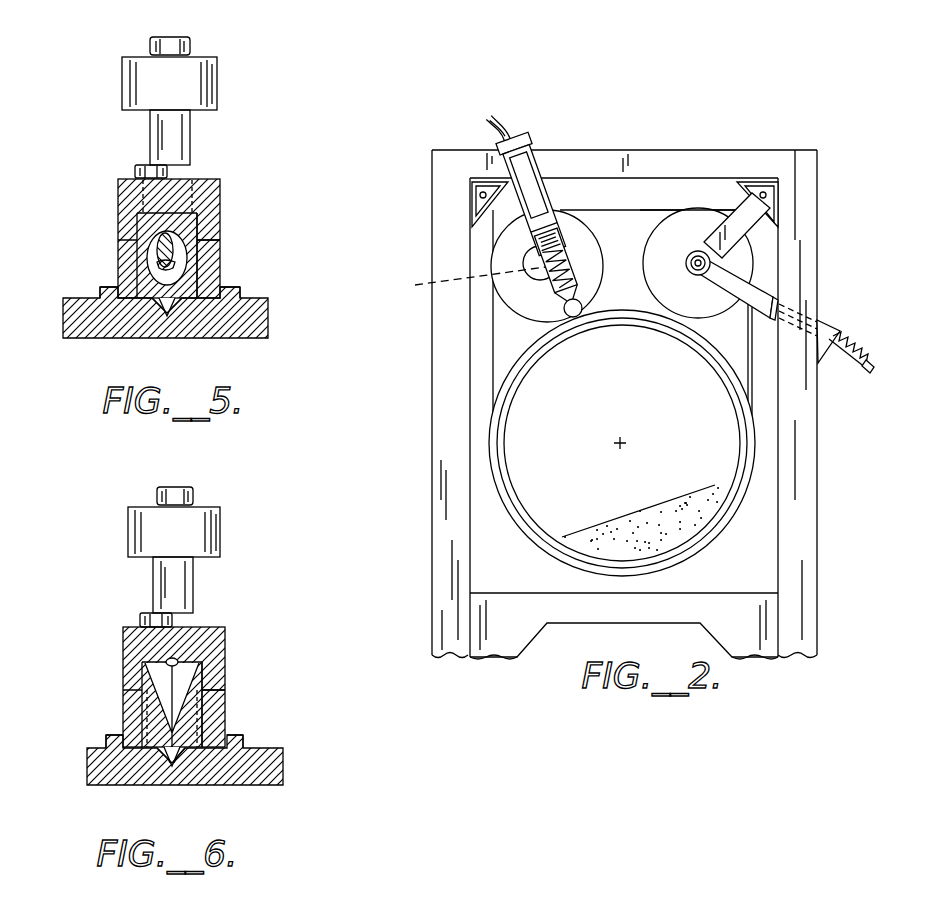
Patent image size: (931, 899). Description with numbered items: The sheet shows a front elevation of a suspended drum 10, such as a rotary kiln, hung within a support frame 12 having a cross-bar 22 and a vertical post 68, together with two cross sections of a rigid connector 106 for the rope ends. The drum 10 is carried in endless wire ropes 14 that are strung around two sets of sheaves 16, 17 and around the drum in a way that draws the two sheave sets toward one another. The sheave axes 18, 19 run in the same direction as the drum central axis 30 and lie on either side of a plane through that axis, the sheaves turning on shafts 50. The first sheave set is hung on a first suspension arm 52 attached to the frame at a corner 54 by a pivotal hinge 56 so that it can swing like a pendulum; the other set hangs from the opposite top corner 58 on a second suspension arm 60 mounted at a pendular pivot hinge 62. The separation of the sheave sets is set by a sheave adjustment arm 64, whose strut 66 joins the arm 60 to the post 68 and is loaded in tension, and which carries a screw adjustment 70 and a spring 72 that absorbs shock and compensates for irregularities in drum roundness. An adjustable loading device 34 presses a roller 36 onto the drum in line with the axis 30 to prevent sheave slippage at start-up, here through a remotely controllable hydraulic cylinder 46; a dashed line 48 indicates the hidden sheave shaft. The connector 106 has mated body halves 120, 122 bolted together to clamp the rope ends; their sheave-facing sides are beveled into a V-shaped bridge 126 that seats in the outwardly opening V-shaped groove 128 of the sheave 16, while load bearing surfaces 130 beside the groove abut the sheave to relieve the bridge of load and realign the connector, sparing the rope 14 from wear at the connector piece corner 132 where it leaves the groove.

In FIG. 2, the drum 10 is at (526, 385).
In FIG. 2, the support frame 12 is at (432, 567).
In FIG. 5, the endless wire ropes 14 is at (175, 245).
In FIG. 6, the endless wire ropes 14 is at (168, 661).
In FIG. 2, the endless wire ropes 14 is at (640, 210).
In FIG. 5, the sheave 16 is at (270, 297).
In FIG. 6, the sheave 16 is at (285, 755).
In FIG. 2, the sheave 16 is at (510, 305).
In FIG. 2, the sheave 17 is at (752, 262).
In FIG. 2, the sheave axis 18 is at (572, 265).
In FIG. 2, the sheave axis 19 is at (694, 256).
In FIG. 2, the cross-bar 22 is at (622, 150).
In FIG. 2, the drum central axis 30 is at (621, 441).
In FIG. 2, the adjustable loading device 34 is at (553, 193).
In FIG. 2, the roller 36 is at (590, 305).
In FIG. 2, the hydraulic cylinder 46 is at (533, 150).
In FIG. 2, the hidden shaft 48 is at (472, 280).
In FIG. 2, the shafts 50 is at (702, 271).
In FIG. 2, the first suspension arm 52 is at (497, 218).
In FIG. 2, the corner 54 is at (470, 182).
In FIG. 2, the pivotal hinge 56 is at (480, 195).
In FIG. 2, the top corner 58 is at (780, 178).
In FIG. 2, the second suspension arm 60 is at (748, 222).
In FIG. 2, the pendular pivot hinge 62 is at (765, 196).
In FIG. 2, the sheave adjustment arm 64 is at (746, 305).
In FIG. 2, the strut 66 is at (770, 292).
In FIG. 2, the vertical post 68 is at (816, 572).
In FIG. 2, the screw adjustment 70 is at (856, 352).
In FIG. 2, the spring 72 is at (840, 362).
In FIG. 5, the rigid connector 106 is at (108, 153).
In FIG. 6, the rigid connector 106 is at (79, 595).
In FIG. 5, the body half 120 is at (118, 255).
In FIG. 6, the body half 120 is at (123, 697).
In FIG. 5, the body half 122 is at (220, 250).
In FIG. 6, the body half 122 is at (225, 690).
In FIG. 5, the V-shaped bridge 126 is at (178, 307).
In FIG. 6, the V-shaped bridge 126 is at (157, 753).
In FIG. 5, the V-shaped groove 128 is at (165, 312).
In FIG. 6, the V-shaped groove 128 is at (178, 767).
In FIG. 5, the load bearing surface 130 is at (228, 296).
In FIG. 6, the load bearing surface 130 is at (232, 740).
In FIG. 6, the connector piece corner 132 is at (176, 742).